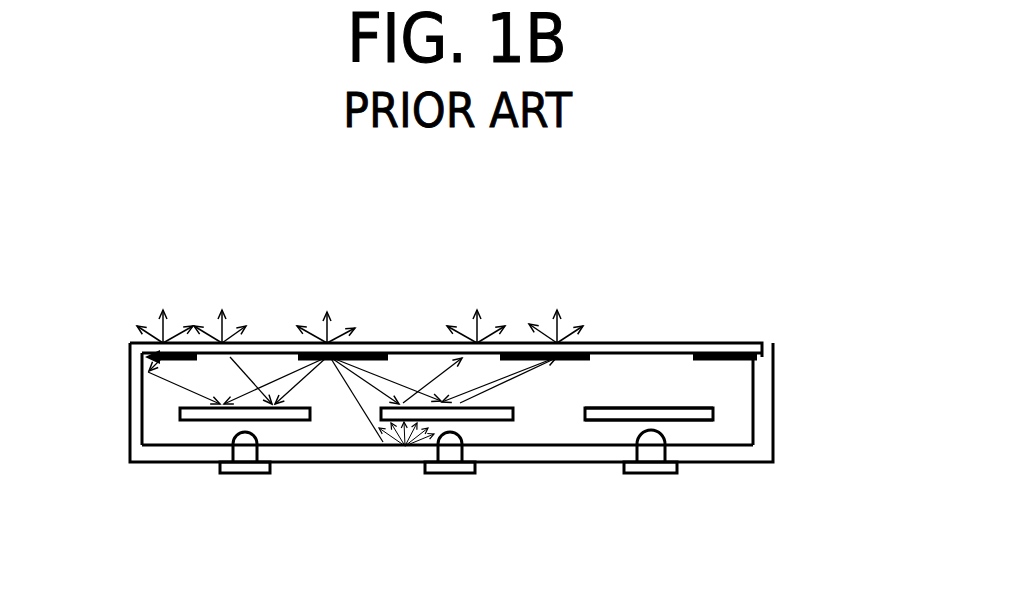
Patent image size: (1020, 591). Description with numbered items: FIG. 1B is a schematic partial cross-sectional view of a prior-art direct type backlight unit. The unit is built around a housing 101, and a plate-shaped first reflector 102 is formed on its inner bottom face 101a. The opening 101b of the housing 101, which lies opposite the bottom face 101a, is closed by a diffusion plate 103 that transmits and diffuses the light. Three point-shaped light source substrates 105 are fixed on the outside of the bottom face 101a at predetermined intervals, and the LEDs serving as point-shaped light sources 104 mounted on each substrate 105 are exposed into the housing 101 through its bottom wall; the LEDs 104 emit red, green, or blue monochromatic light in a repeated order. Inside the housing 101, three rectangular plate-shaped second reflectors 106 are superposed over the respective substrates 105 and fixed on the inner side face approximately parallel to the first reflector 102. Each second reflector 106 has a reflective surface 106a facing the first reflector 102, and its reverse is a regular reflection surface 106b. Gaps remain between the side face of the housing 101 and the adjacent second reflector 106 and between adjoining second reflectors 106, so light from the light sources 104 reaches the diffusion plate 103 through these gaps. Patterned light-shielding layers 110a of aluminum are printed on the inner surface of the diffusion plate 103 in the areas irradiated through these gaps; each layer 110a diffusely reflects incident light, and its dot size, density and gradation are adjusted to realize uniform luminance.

The housing 101 is at (762, 395).
The bottom face 101a is at (710, 440).
The opening 101b is at (437, 363).
The first reflector 102 is at (532, 428).
The diffusion plate 103 is at (687, 347).
The point-shaped light source 104 is at (452, 443).
The point-shaped light source substrate 105 is at (425, 473).
The second reflector 106 is at (260, 413).
The reflective surface 106a is at (598, 421).
The regular reflection surface 106b is at (637, 407).
The light-shielding layer 110a is at (375, 347).